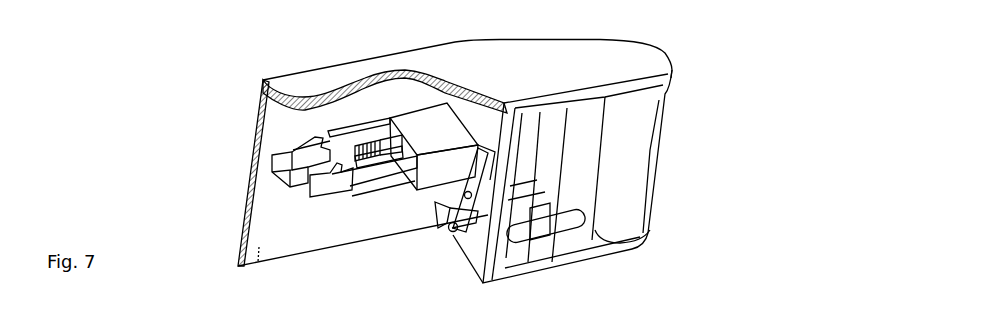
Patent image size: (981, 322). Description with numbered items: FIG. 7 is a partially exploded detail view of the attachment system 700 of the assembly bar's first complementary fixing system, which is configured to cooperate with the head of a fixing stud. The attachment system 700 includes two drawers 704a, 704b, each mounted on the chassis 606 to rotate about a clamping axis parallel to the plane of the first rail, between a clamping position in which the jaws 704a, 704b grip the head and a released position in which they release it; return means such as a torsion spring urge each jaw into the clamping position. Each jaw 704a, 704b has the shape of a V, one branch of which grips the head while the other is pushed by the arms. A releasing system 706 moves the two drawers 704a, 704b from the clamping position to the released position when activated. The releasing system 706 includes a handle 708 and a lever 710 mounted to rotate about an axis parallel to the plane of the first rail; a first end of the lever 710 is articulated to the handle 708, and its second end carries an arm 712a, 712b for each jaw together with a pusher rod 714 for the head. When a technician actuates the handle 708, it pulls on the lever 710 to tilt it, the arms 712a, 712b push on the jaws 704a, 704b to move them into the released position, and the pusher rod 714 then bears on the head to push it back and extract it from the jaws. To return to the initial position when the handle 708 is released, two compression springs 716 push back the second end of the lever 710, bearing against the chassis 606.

The attachment system 700 is at (757, 125).
The drawer (jaw) 704a is at (272, 155).
The drawer (jaw) 704b is at (308, 193).
The releasing system 706 is at (323, 263).
The handle 708 is at (548, 225).
The lever 710 is at (432, 197).
The arm 712a is at (328, 131).
The arm 712b is at (358, 186).
The pusher rod 714 is at (388, 140).
The compression spring 716 is at (365, 142).
The chassis 606 is at (258, 262).